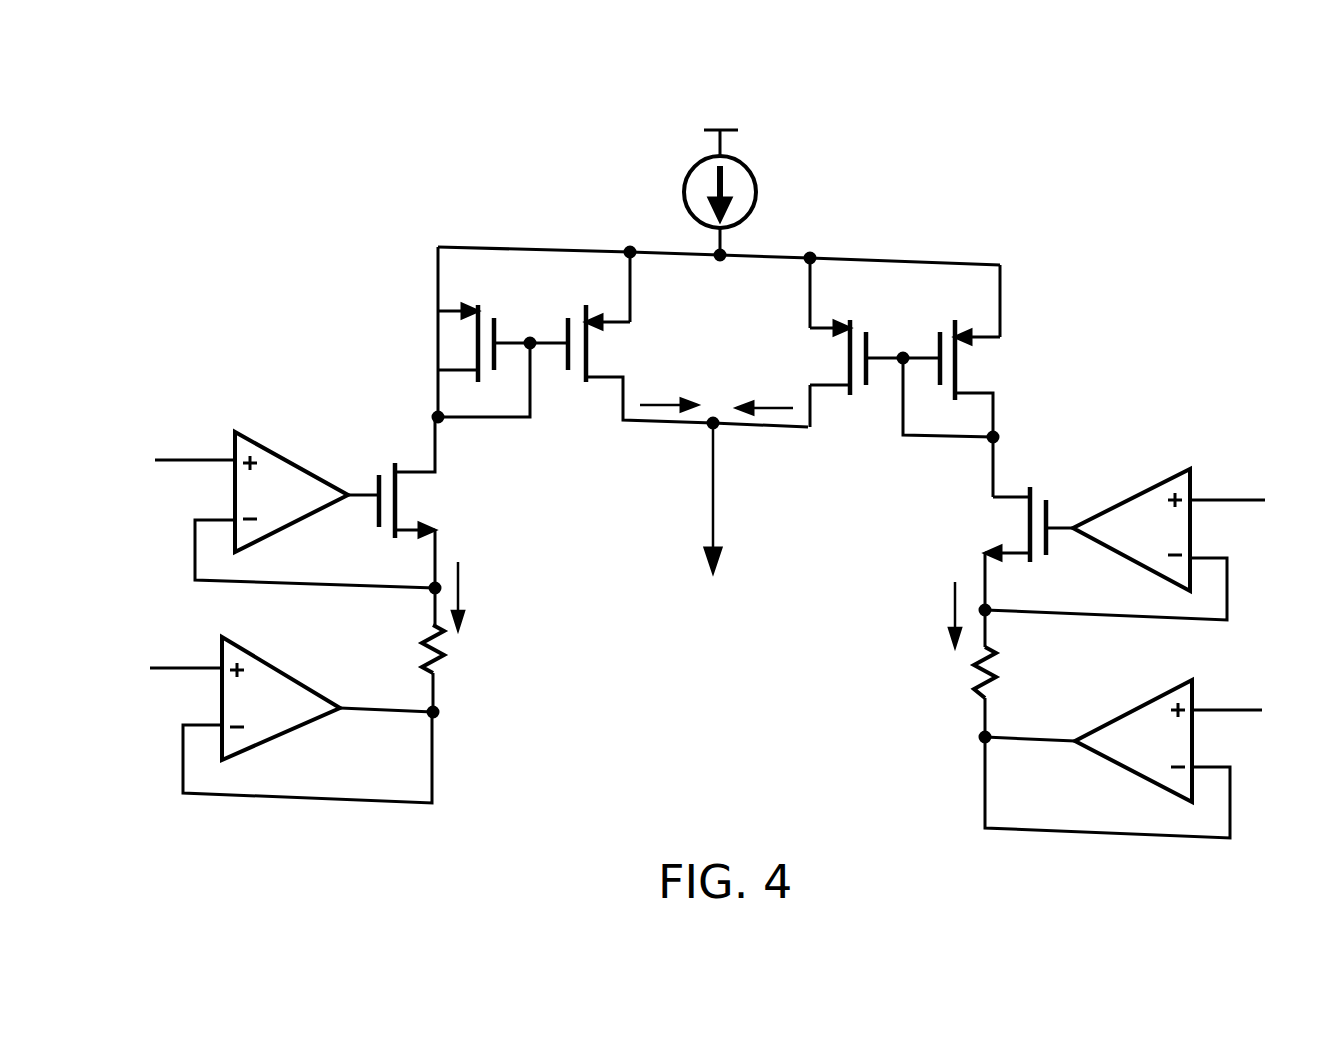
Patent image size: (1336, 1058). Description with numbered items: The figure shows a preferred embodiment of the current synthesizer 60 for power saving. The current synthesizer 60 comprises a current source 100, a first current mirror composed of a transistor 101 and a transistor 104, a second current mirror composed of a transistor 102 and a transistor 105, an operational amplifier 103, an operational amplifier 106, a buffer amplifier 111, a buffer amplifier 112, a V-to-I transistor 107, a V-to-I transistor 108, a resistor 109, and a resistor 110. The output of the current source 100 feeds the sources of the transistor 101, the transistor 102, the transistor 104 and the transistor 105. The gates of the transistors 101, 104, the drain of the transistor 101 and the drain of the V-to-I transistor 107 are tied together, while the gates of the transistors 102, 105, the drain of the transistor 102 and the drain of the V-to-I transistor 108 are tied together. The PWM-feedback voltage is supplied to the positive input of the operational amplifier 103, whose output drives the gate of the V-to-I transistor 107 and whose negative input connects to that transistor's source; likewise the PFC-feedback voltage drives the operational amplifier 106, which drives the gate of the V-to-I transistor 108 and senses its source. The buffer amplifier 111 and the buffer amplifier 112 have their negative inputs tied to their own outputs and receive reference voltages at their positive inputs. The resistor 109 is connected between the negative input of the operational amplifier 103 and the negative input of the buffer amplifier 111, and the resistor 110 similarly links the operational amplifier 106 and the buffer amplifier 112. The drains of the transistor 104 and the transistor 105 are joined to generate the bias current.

The current synthesizer 60 is at (1237, 180).
The current source 100 is at (760, 185).
The transistor 101 is at (433, 350).
The transistor 102 is at (993, 370).
The operational amplifier 103 is at (270, 437).
The transistor 104 is at (600, 390).
The transistor 105 is at (825, 400).
The operational amplifier 106 is at (1163, 470).
The V-to-I transistor 107 is at (437, 490).
The V-to-I transistor 108 is at (980, 513).
The resistor 109 is at (455, 668).
The resistor 110 is at (958, 695).
The buffer amplifier 111 is at (278, 745).
The buffer amplifier 112 is at (1122, 781).